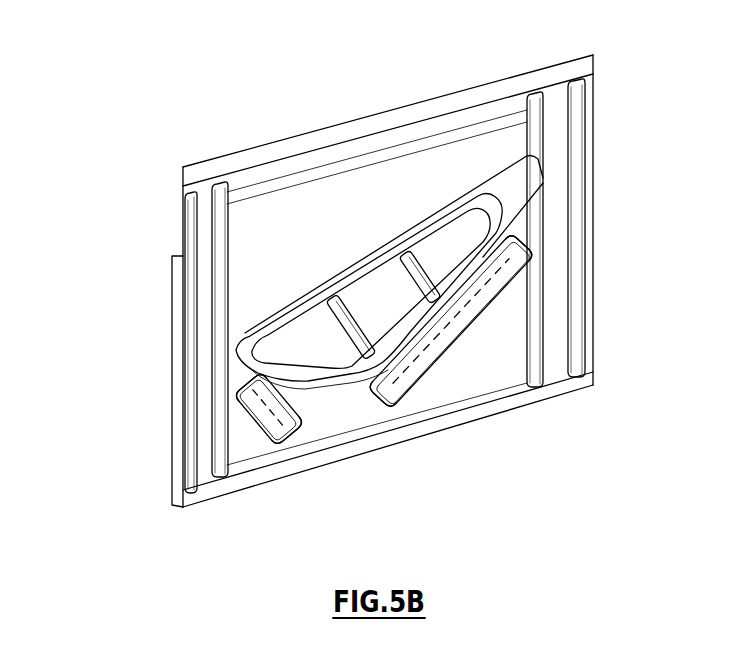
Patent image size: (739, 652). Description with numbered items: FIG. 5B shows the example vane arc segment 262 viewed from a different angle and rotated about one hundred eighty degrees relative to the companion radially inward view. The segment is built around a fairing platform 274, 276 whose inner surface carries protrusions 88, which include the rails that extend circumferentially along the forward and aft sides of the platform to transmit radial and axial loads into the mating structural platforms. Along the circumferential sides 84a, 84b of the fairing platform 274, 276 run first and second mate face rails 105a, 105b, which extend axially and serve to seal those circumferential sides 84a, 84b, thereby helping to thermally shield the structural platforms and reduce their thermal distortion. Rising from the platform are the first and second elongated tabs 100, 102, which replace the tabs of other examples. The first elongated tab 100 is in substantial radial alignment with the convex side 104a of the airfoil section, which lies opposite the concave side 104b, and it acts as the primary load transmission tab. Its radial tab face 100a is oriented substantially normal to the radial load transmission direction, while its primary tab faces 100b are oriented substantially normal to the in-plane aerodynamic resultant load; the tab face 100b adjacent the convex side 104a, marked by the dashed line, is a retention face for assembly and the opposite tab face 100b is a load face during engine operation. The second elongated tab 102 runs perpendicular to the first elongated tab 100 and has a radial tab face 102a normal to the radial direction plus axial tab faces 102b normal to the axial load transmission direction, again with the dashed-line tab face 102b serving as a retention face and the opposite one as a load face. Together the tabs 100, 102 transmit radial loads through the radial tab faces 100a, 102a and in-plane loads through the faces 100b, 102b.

The vane arc segment 262 is at (141, 332).
The circumferential side 84a is at (315, 130).
The circumferential side 84b is at (493, 418).
The first mate face rail 105a is at (455, 97).
The second mate face rail 105b is at (223, 490).
The fairing platform 276 is at (172, 273).
The fairing platform 274 is at (563, 397).
The protrusions 88 is at (231, 322).
The convex side 104a is at (347, 383).
The concave side 104b is at (327, 281).
The first elongated tab 100 is at (516, 364).
The radial tab face 100a is at (432, 389).
The primary tab faces 100b is at (493, 223).
The second elongated tab 102 is at (233, 459).
The radial tab face 102a is at (297, 444).
The axial tab faces 102b is at (250, 418).